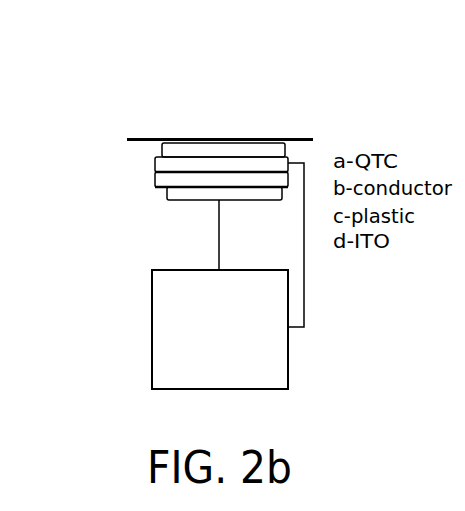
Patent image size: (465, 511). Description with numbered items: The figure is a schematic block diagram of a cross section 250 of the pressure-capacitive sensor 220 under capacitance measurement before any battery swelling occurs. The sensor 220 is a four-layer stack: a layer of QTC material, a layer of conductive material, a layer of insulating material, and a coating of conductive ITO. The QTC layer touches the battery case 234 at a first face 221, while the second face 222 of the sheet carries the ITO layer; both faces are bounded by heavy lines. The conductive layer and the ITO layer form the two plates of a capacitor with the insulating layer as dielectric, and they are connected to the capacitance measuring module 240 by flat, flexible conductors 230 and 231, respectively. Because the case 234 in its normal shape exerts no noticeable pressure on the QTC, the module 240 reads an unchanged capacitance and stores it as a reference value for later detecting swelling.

The cross section 250 is at (76, 89).
The battery case 234 is at (313, 140).
The first face 221 is at (166, 143).
The second face 222 is at (170, 187).
The pressure-capacitive sensor 220 is at (194, 204).
The conductor 231 is at (219, 238).
The conductor 230 is at (304, 307).
The capacitance measuring module 240 is at (203, 380).